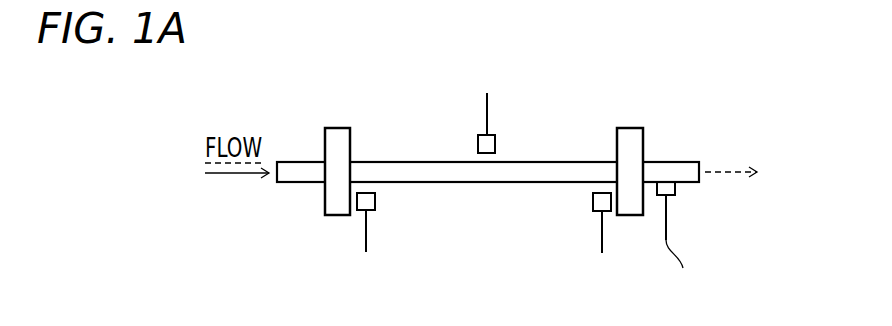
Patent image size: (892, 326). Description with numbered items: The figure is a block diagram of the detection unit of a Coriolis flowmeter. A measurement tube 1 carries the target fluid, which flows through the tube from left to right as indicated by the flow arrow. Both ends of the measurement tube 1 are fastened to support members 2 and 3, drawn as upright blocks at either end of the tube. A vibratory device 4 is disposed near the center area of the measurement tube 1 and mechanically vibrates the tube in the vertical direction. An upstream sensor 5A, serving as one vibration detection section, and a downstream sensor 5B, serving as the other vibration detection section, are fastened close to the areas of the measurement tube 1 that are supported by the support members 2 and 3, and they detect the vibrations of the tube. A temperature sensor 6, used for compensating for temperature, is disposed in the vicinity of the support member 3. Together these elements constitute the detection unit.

The measurement tube 1 is at (520, 183).
The support member 2 is at (347, 148).
The support member 3 is at (643, 150).
The vibratory device 4 is at (495, 145).
The upstream sensor 5A is at (375, 201).
The downstream sensor 5B is at (593, 201).
The temperature sensor 6 is at (675, 188).